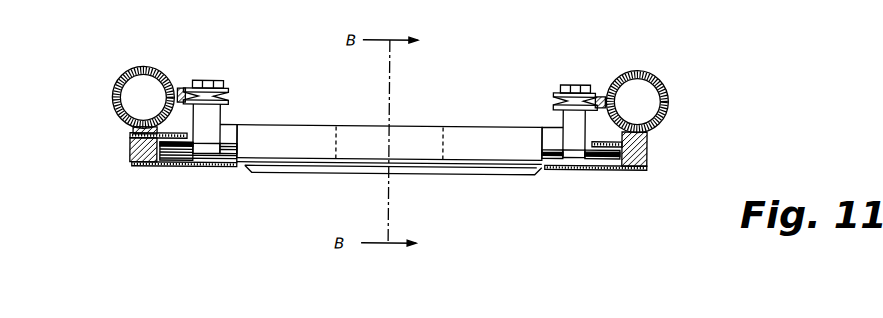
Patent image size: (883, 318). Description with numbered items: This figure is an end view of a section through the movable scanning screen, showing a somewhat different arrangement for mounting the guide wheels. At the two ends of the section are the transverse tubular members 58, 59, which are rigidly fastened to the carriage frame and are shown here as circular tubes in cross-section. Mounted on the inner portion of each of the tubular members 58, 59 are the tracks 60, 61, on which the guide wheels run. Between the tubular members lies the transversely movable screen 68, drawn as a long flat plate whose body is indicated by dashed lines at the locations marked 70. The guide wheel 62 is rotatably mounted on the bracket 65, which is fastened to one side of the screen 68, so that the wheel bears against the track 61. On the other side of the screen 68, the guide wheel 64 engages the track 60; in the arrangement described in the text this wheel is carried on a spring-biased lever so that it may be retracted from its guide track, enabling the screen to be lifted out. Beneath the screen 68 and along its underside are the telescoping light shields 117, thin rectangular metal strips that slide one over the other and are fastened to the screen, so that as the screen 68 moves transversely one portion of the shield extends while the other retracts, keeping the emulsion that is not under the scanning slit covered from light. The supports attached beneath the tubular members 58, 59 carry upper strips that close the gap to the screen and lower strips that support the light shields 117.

The transverse tubular member 58 is at (124, 73).
The transverse tubular member 59 is at (661, 82).
The track 60 is at (179, 91).
The track 61 is at (603, 98).
The guide wheel 62 is at (562, 92).
The guide wheel 64 is at (228, 89).
The bracket 65 is at (572, 133).
The screen 68 is at (289, 136).
The opening 70 is at (443, 136).
The telescoping light shield 117 is at (233, 158).